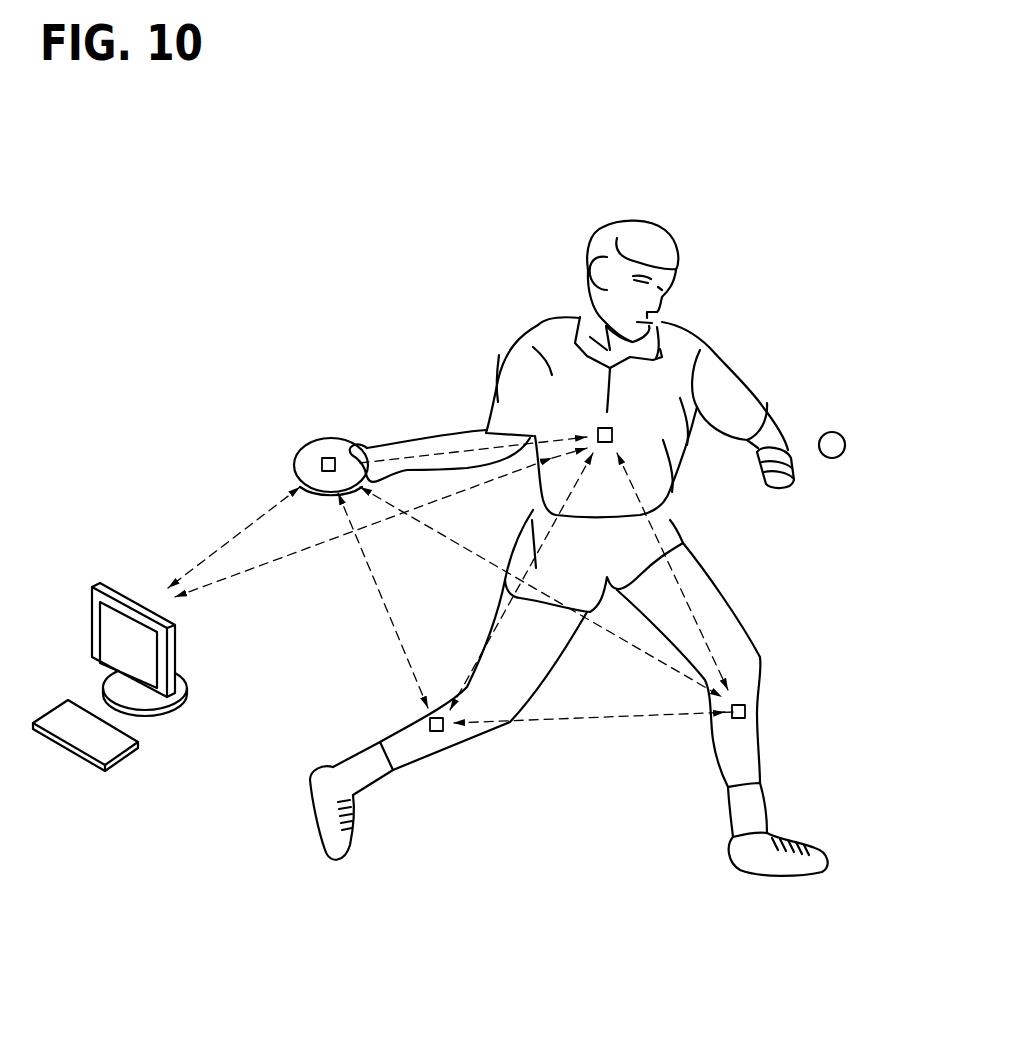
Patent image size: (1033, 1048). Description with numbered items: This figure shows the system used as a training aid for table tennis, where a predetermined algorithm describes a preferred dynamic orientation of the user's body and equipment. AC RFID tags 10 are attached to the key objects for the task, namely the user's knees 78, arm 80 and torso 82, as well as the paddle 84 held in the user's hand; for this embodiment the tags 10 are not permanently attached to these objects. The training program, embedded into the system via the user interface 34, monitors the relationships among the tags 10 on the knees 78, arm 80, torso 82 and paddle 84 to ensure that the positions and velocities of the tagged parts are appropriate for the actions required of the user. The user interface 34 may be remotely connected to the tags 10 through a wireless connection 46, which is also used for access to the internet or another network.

The AC RFID tag 10 is at (330, 457).
The user interface 34 is at (118, 628).
The wireless connection 46 is at (610, 718).
The knees 78 is at (738, 653).
The arm 80 is at (447, 443).
The torso 82 is at (552, 375).
The paddle 84 is at (305, 462).